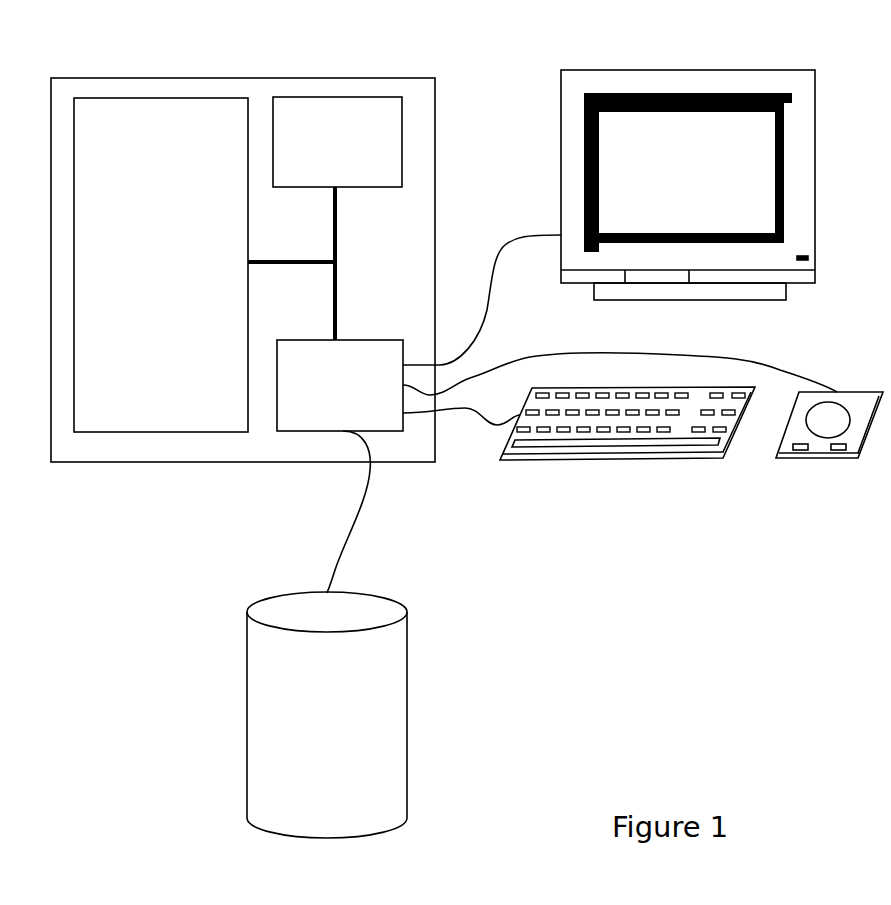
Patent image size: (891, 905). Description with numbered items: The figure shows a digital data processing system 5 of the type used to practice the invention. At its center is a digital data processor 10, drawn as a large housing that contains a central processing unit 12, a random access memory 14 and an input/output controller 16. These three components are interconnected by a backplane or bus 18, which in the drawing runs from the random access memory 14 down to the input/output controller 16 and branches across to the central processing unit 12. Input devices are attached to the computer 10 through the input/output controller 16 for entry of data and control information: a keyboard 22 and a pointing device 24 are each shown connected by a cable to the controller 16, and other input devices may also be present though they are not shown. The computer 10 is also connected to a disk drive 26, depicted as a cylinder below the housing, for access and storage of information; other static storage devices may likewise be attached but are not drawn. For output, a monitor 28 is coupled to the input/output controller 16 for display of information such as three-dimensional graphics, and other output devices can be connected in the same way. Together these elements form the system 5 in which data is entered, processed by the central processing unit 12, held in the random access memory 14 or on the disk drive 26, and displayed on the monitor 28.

The digital data processing system 5 is at (750, 601).
The digital data processor 10 is at (263, 90).
The central processing unit 12 is at (168, 108).
The random access memory 14 is at (369, 110).
The input/output controller 16 is at (308, 413).
The bus 18 is at (338, 245).
The keyboard 22 is at (680, 437).
The pointing device 24 is at (820, 458).
The disk drive 26 is at (408, 645).
The monitor 28 is at (752, 85).